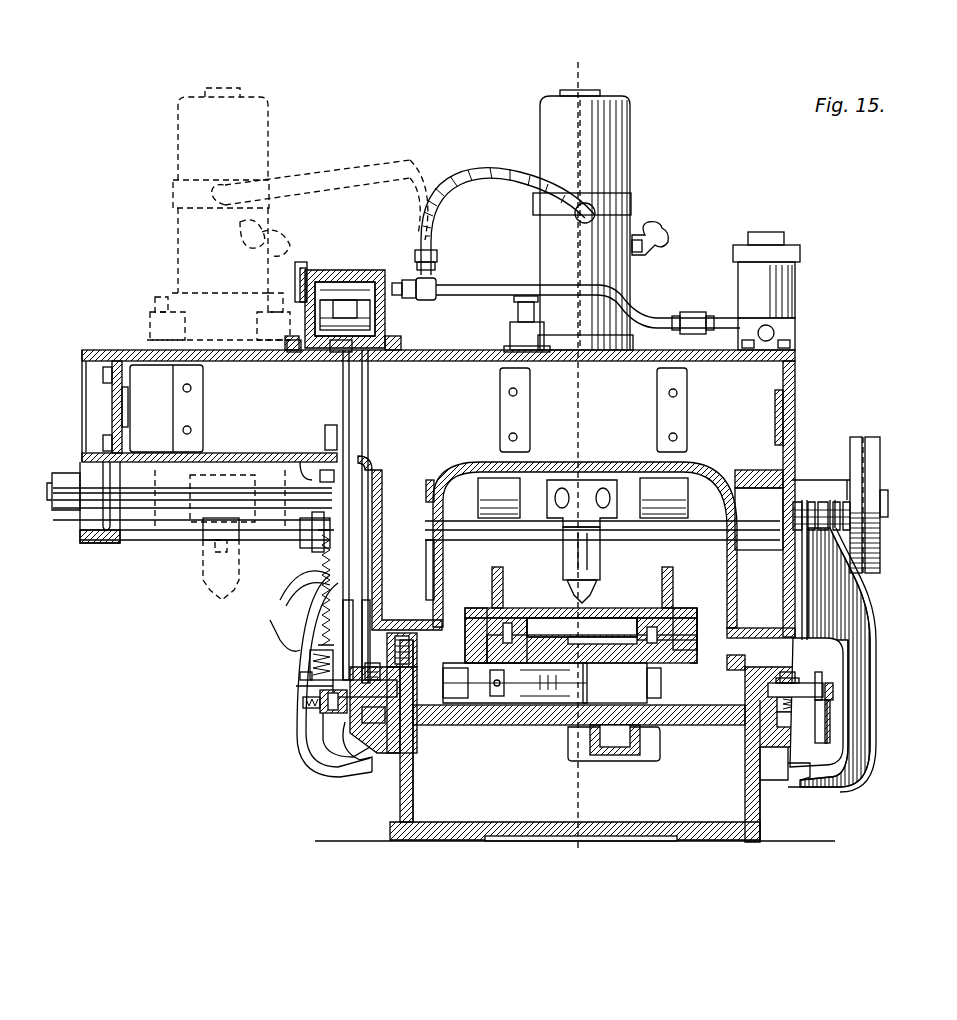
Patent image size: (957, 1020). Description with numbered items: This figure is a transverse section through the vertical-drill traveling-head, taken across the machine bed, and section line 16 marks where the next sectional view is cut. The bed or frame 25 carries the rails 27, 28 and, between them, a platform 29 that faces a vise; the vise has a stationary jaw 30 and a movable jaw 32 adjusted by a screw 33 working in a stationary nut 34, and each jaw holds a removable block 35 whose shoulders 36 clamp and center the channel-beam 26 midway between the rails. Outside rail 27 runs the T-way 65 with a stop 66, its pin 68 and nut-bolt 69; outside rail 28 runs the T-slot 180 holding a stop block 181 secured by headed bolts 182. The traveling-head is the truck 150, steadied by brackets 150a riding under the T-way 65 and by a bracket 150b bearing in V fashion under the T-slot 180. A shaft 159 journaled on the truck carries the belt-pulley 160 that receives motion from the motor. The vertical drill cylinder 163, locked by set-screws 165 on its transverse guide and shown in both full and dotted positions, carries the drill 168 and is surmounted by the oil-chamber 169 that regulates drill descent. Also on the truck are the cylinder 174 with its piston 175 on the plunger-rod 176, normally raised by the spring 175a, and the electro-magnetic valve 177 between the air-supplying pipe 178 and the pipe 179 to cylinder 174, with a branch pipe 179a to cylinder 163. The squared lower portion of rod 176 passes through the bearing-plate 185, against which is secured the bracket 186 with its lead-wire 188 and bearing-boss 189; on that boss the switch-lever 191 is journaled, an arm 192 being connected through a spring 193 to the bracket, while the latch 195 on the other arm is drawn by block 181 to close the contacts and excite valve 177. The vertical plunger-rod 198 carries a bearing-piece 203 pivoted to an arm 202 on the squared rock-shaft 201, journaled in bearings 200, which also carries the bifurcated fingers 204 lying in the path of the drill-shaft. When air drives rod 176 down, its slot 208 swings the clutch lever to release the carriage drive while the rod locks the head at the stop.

The section line 16 is at (622, 88).
The bed or frame 25 is at (762, 808).
The channel-beam 26 is at (532, 605).
The rail 27 is at (745, 685).
The rail 28 is at (412, 667).
The platform 29 is at (520, 725).
The stationary jaw 30 is at (698, 641).
The movable jaw 32 is at (548, 640).
The screw 33 is at (546, 728).
The stationary nut 34 is at (628, 690).
The removable block 35 is at (470, 612).
The shoulders 36 is at (493, 585).
The T-way 65 is at (785, 747).
The stop 66 is at (805, 683).
The lug or pin 68 is at (828, 718).
The nut-bolt 69 is at (787, 672).
The truck 150 is at (797, 362).
The brackets 150a is at (878, 678).
The bracket 150b is at (345, 775).
The shaft 159 is at (232, 495).
The belt-pulley 160 is at (867, 437).
The vertical drill cylinder 163 is at (178, 240).
The set-screws 165 is at (155, 300).
The drill 168 is at (215, 600).
The oil-chamber 169 is at (178, 152).
The cylinder 174 is at (385, 316).
The piston 175 is at (318, 318).
The spring 175a is at (330, 362).
The plunger-rod 176 is at (358, 425).
The electro-magnetic valve 177 is at (797, 275).
The compressed air-supplying pipe 178 is at (775, 330).
The pipe 179 is at (478, 290).
The branch pipe 179a is at (445, 178).
The T-slot 180 is at (413, 760).
The stop block 181 is at (342, 735).
The headed bolts 182 is at (385, 630).
The bearing-plate 185 is at (322, 560).
The bracket 186 is at (343, 670).
The lead-wire 188 is at (280, 620).
The bearing-boss 189 is at (300, 694).
The switch-lever 191 is at (328, 712).
The spring 192 is at (303, 706).
The spring 193 is at (310, 664).
The latch 195 is at (297, 745).
The plunger-rod 198 is at (310, 472).
The bearings 200 is at (102, 545).
The rock-shaft 201 is at (170, 535).
The arm 202 is at (312, 545).
The bearing-piece 203 is at (375, 502).
The bifurcated fingers 204 is at (210, 540).
The slot 208 is at (372, 488).